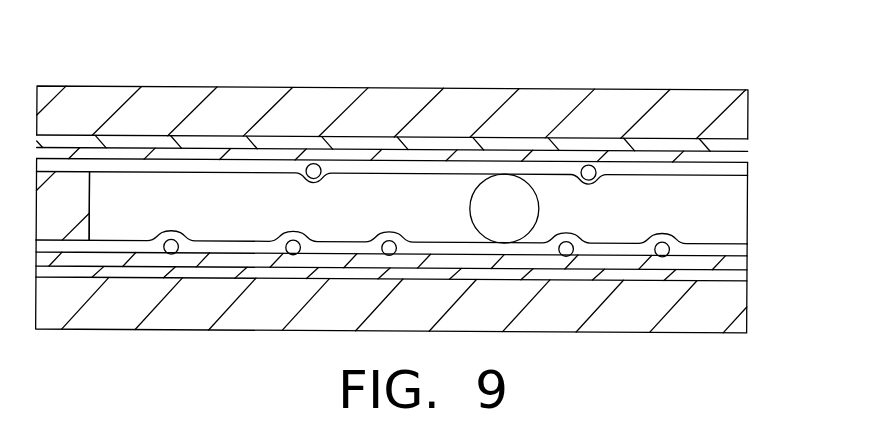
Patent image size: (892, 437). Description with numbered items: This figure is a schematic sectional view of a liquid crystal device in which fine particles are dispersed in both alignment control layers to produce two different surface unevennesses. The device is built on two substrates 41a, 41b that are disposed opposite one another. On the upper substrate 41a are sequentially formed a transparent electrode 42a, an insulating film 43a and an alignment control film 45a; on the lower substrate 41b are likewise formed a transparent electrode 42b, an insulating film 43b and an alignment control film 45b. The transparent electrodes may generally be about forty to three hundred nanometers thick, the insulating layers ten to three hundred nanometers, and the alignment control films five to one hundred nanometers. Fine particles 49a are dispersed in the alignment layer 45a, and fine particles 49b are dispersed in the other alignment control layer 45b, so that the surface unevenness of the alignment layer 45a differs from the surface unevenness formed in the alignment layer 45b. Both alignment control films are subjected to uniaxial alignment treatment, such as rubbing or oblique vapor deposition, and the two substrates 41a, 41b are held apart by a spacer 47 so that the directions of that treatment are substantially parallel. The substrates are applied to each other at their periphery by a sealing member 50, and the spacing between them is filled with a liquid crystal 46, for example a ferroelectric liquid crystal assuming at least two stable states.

The substrate 41a is at (700, 90).
The transparent electrode 42a is at (750, 145).
The insulating film 43a is at (748, 155).
The alignment control film 45a is at (748, 170).
The alignment control film 45b is at (750, 252).
The insulating film 43b is at (750, 264).
The transparent electrode 42b is at (752, 277).
The substrate 41b is at (700, 334).
The liquid crystal 46 is at (236, 192).
The spacer 47 is at (493, 208).
The fine particles 49a is at (314, 162).
The fine particles 49b is at (390, 238).
The sealing member 50 is at (62, 189).